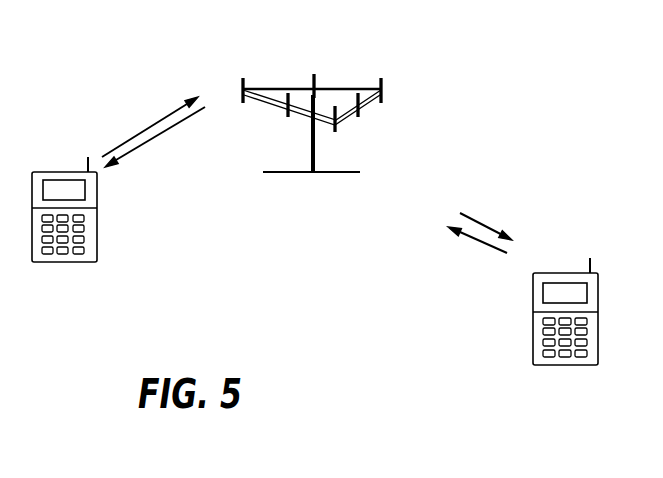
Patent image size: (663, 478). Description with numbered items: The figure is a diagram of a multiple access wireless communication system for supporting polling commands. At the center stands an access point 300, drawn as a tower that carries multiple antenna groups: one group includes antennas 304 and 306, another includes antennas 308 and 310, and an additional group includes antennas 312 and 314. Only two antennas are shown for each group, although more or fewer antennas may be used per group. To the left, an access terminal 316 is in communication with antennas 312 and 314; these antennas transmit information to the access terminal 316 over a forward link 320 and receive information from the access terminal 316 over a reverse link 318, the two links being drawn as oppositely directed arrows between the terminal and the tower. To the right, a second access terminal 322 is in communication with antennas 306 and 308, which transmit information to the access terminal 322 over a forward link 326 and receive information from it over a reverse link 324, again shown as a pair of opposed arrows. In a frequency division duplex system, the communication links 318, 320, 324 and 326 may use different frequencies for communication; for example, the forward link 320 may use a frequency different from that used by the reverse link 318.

The access point 300 is at (313, 173).
The antenna 304 is at (343, 130).
The antenna 306 is at (363, 112).
The antenna 308 is at (387, 87).
The antenna 310 is at (315, 75).
The antenna 312 is at (243, 83).
The antenna 314 is at (289, 118).
The access terminal 316 is at (77, 171).
The reverse link 318 is at (150, 127).
The forward link 320 is at (160, 137).
The access terminal 322 is at (553, 273).
The reverse link 324 is at (470, 238).
The forward link 326 is at (490, 228).